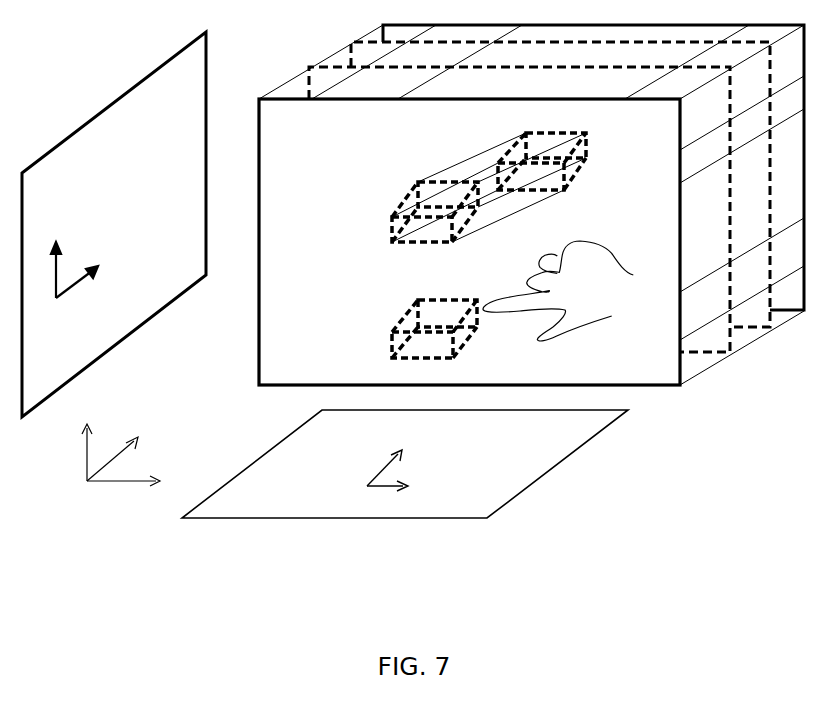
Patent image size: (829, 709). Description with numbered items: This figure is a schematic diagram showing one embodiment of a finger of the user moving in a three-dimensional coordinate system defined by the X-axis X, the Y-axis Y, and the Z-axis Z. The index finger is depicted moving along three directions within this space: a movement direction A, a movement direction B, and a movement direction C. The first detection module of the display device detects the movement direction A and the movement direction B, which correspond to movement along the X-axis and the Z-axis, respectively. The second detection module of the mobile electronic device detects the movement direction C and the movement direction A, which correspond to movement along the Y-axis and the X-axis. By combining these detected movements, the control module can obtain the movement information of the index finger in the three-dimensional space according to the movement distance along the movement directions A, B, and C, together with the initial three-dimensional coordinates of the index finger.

The movement direction A a is at (229, 363).
The movement direction B b is at (54, 255).
The movement direction C c is at (409, 489).
The X-axis X is at (123, 449).
The Y-axis Y is at (133, 476).
The Z-axis Z is at (90, 437).